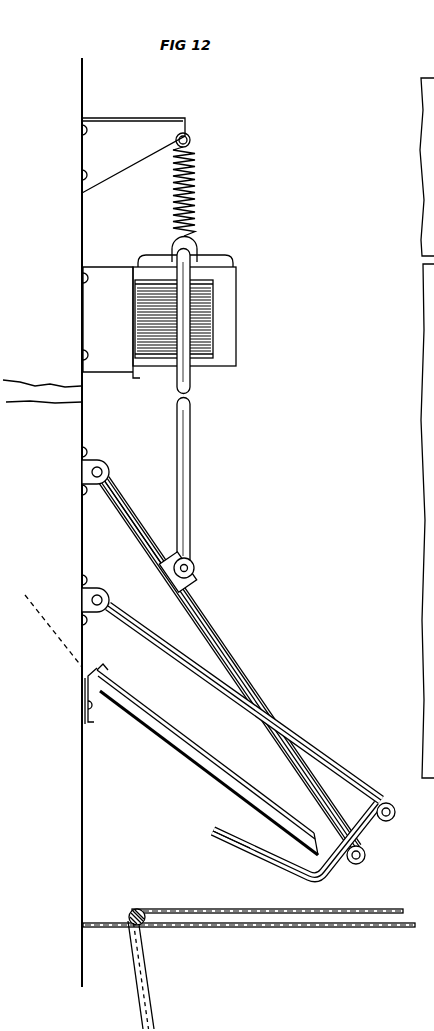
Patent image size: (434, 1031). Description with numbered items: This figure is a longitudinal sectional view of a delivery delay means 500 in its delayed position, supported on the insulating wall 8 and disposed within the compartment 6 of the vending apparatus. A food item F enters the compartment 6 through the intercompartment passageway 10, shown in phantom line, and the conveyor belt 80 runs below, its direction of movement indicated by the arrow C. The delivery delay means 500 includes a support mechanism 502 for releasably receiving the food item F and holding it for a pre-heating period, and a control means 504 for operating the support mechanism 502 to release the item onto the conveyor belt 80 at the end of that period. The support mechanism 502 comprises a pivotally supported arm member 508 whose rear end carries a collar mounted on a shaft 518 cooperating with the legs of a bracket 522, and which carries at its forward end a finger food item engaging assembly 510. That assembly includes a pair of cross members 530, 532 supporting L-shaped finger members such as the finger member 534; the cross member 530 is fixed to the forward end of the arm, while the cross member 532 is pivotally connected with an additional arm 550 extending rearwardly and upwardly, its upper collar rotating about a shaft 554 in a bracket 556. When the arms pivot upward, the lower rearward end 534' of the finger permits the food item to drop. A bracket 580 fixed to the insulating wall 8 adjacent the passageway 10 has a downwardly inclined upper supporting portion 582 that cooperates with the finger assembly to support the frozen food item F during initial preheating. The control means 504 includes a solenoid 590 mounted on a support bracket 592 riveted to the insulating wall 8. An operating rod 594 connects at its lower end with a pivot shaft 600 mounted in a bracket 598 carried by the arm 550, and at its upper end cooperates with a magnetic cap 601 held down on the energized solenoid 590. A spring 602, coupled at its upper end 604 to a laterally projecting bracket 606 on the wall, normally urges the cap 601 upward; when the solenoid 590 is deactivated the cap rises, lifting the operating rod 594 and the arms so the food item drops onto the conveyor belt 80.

The delivery delay means 500 is at (220, 291).
The support mechanism 502 is at (265, 685).
The control means 504 is at (240, 330).
The arm member 508 is at (342, 773).
The finger food item engaging assembly 510 is at (250, 862).
The shaft 518 is at (102, 593).
The bracket 522 is at (87, 603).
The cross member 530 is at (393, 819).
The cross member 532 is at (365, 857).
The L-shaped finger member 534 is at (295, 856).
The lower rearward end of finger 534' is at (200, 834).
The additional arm 550 is at (222, 647).
The shaft 554 is at (102, 465).
The bracket 556 is at (82, 484).
The bracket 580 is at (85, 717).
The downwardly inclined upper supporting portion 582 is at (105, 682).
The solenoid 590 is at (145, 283).
The support bracket 592 is at (100, 280).
The operating rod 594 is at (188, 373).
The bracket 598 is at (175, 560).
The pivot shaft 600 is at (193, 562).
The magnetic cap 601 is at (213, 257).
The spring 602 is at (195, 208).
The upper end of spring 604 is at (192, 140).
The laterally projecting bracket 606 is at (152, 125).
The conveyor belt 80 is at (293, 913).
The insulating wall 8 is at (42, 305).
The intercompartment passageway 10 is at (62, 608).
The compartment 6 is at (115, 835).
The food item F is at (202, 760).
The arrow C is at (403, 895).